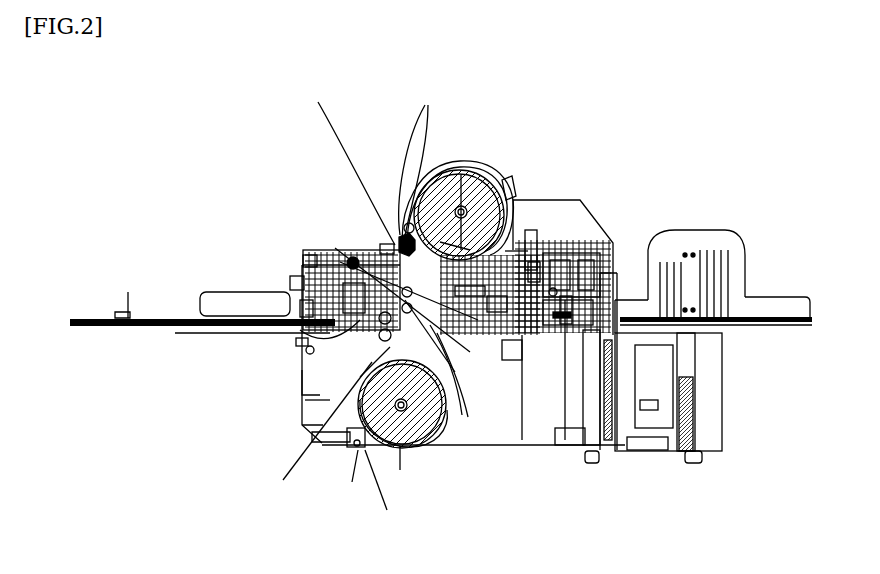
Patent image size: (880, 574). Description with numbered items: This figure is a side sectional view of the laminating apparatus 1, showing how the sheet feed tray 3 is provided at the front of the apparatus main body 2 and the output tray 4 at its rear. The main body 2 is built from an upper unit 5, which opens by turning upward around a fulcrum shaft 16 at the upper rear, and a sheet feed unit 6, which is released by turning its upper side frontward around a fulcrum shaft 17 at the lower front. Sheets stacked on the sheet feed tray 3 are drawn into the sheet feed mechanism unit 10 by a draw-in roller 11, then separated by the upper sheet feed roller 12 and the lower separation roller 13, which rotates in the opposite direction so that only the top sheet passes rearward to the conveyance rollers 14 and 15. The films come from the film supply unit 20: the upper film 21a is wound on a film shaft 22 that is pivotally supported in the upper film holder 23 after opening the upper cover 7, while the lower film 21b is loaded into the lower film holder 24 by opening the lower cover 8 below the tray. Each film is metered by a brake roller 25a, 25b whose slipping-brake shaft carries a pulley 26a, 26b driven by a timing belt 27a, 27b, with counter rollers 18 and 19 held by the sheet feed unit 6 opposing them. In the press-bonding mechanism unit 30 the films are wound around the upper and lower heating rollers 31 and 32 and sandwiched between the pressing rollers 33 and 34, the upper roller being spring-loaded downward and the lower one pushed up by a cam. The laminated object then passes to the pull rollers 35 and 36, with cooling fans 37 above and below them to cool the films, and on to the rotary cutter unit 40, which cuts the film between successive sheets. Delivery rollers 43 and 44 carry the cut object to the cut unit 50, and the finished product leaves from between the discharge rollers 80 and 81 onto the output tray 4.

The laminating apparatus 1 is at (236, 210).
The apparatus main body 2 is at (510, 440).
The sheet feed tray 3 is at (240, 316).
The output tray 4 is at (776, 320).
The upper unit 5 is at (547, 205).
The sheet feed unit 6 is at (303, 432).
The upper cover 7 is at (480, 162).
The lower cover 8 is at (300, 392).
The sheet feed mechanism unit 10 is at (300, 282).
The draw-in roller 11 is at (300, 292).
The upper sheet feed roller 12 is at (306, 262).
The lower separation roller 13 is at (305, 330).
The conveyance roller 14 is at (332, 255).
The conveyance roller 15 is at (300, 338).
The fulcrum shaft 16 is at (632, 282).
The fulcrum shaft 17 is at (350, 447).
The counter roller 18 is at (402, 246).
The counter roller 19 is at (312, 348).
The film supply unit 20 is at (333, 293).
The upper film 21a is at (420, 157).
The lower film 21b is at (382, 495).
The film shaft 22 is at (462, 205).
The upper film holder 23 is at (510, 186).
The lower film holder 24 is at (432, 447).
The brake roller 25a is at (459, 215).
The brake roller 25b is at (421, 404).
The pulley 26a is at (406, 226).
The pulley 26b is at (383, 340).
The timing belt 27a is at (386, 246).
The timing belt 27b is at (392, 368).
The press-bonding mechanism unit 30 is at (470, 380).
The upper heating roller 31 is at (345, 265).
The lower heating roller 32 is at (366, 322).
The pressing roller 33 is at (409, 272).
The pressing roller 34 is at (430, 318).
The pull roller 35 is at (472, 298).
The pull roller 36 is at (495, 312).
The cooling fan 37 is at (467, 232).
The rotary cutter unit 40 is at (516, 387).
The delivery roller 43 is at (538, 265).
The delivery roller 44 is at (562, 310).
The cut unit 50 is at (568, 255).
The discharge roller 80 is at (610, 280).
The discharge roller 81 is at (585, 345).